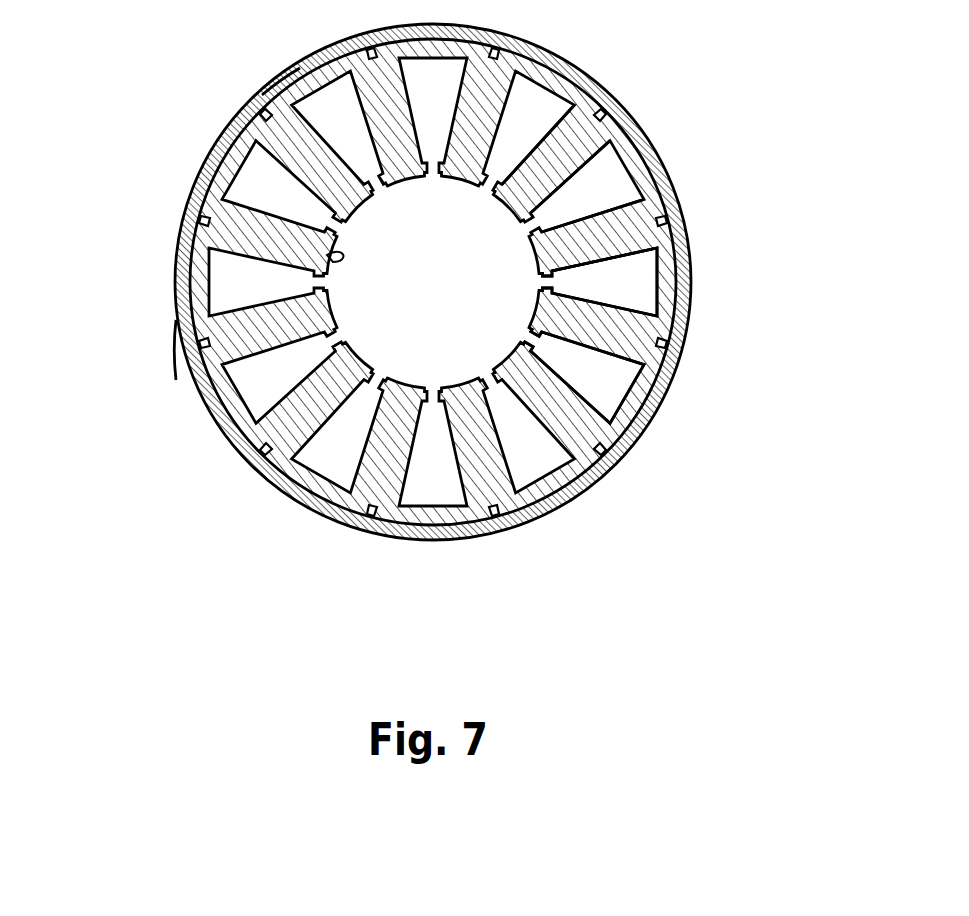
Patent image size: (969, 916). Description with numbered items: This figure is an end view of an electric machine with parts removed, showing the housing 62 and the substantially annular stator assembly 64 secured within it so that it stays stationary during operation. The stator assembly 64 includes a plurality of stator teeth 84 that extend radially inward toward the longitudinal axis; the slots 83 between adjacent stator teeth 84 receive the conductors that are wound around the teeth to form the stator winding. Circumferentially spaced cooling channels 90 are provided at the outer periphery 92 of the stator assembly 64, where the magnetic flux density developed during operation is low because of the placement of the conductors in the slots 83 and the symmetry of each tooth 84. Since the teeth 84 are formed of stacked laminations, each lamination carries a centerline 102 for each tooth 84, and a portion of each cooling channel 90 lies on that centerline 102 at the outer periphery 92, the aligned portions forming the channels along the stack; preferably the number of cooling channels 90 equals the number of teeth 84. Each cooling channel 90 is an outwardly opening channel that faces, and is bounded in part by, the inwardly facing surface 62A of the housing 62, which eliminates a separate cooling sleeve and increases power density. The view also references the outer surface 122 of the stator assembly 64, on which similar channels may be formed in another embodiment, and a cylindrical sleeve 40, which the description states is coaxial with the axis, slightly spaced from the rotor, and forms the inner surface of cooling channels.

The cylindrical sleeve 40 is at (327, 255).
The housing 62 is at (580, 483).
The inwardly facing surface of the housing 62A is at (594, 108).
The stator assembly 64 is at (598, 118).
The slots 83 is at (597, 375).
The stator teeth 84 is at (622, 230).
The cooling channels 90 is at (433, 530).
The outer periphery of the stator assembly 92 is at (623, 415).
The centerline 102 is at (152, 369).
The outer surface of the stator assembly 122 is at (281, 86).